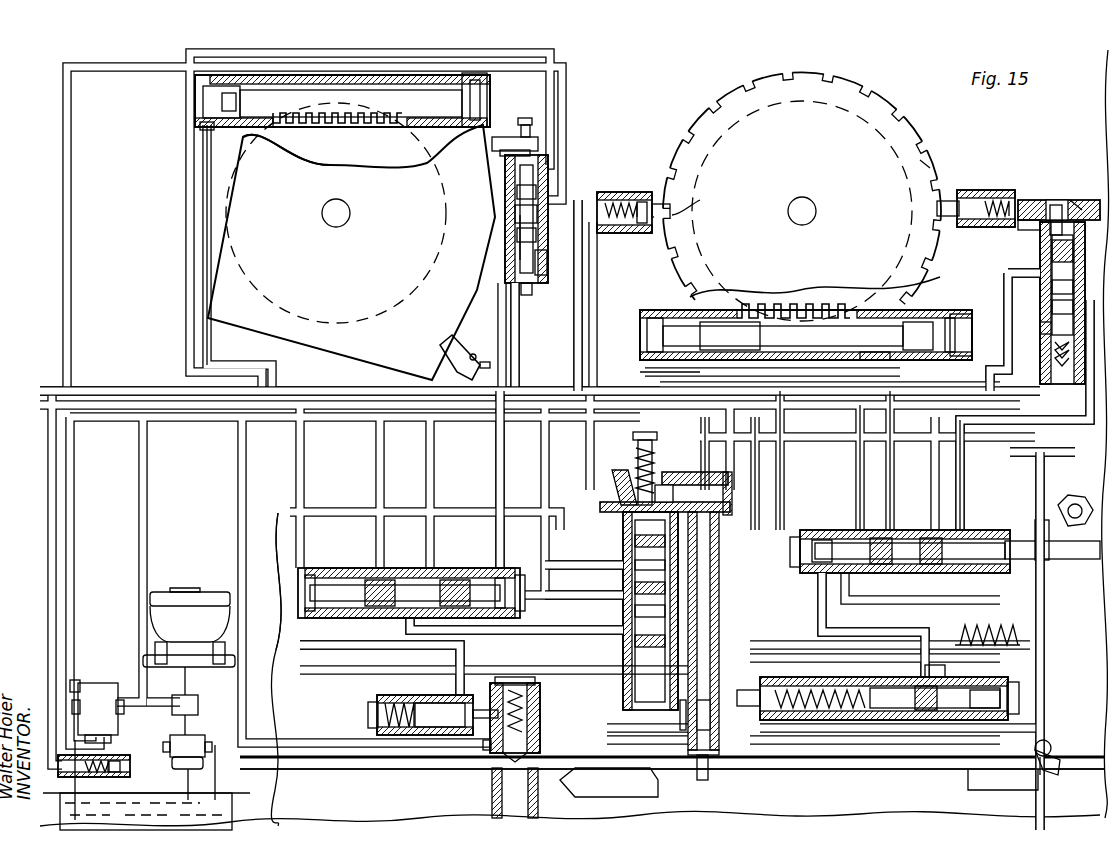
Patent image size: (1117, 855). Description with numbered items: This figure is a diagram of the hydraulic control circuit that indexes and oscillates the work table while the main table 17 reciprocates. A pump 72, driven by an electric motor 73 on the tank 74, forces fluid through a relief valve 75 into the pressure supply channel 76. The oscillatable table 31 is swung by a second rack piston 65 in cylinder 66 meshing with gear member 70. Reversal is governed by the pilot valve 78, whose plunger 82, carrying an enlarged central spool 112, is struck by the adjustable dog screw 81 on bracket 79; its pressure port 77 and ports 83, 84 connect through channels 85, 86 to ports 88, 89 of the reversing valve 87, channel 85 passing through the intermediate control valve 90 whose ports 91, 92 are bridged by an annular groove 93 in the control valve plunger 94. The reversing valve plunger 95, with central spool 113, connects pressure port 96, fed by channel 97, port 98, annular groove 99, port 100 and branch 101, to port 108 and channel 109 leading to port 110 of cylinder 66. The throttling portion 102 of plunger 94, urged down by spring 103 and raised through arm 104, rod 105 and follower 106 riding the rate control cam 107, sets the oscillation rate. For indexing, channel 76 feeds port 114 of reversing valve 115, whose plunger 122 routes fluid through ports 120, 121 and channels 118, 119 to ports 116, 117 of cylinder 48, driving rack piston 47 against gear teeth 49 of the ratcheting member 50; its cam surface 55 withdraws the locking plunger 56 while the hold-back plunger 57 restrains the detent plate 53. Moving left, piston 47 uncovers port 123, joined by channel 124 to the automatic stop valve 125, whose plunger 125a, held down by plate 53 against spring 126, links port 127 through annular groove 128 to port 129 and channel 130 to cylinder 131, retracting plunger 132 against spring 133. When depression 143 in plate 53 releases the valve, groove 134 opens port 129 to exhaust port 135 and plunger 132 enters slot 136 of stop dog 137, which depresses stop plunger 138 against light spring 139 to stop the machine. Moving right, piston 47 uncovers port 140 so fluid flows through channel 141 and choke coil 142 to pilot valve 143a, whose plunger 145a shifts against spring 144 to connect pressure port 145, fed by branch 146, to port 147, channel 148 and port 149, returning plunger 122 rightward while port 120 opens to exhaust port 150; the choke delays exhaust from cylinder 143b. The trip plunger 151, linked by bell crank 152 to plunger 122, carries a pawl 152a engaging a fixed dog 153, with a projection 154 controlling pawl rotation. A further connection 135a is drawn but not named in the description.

The main table 17 is at (280, 595).
The oscillatable table 31 is at (232, 302).
The rack piston 47 is at (925, 320).
The cylinder 48 is at (935, 300).
The gear teeth 49 is at (760, 302).
The ratcheting member 50 is at (672, 172).
The detent plate 53 is at (920, 160).
The cam surface 55 is at (690, 210).
The locking plunger 56 is at (630, 194).
The hold-back plunger 57 is at (980, 192).
The second rack piston 65 is at (400, 100).
The cylinder 66 is at (225, 100).
The gear member 70 is at (262, 140).
The pump 72 is at (195, 745).
The electric motor 73 is at (170, 600).
The tank 74 is at (225, 800).
The relief valve 75 is at (95, 690).
The pressure supply channel 76 is at (540, 390).
The pressure port 77 is at (545, 265).
The pilot valve 78 is at (530, 130).
The bracket 79 is at (510, 130).
The adjustable dog screw 81 is at (550, 95).
The pilot valve plunger 82 is at (528, 284).
The port 83 is at (548, 200).
The port 84 is at (505, 225).
The channel 85 is at (585, 262).
The channel 86 is at (515, 340).
The reversing valve 87 is at (320, 575).
The port 88 is at (500, 568).
The port 89 is at (330, 619).
The intermediate control valve 90 is at (620, 690).
The port 91 is at (600, 678).
The port 92 is at (665, 610).
The annular groove 93 is at (668, 640).
The control valve plunger 94 is at (668, 540).
The reversing valve plunger 95 is at (320, 562).
The pressure port 96 is at (380, 645).
The channel 97 is at (545, 580).
The port 98 is at (675, 562).
The annular groove 99 is at (662, 585).
The port 100 is at (640, 500).
The branch 101 is at (510, 470).
The throttling portion 102 is at (610, 625).
The spring 103 is at (662, 470).
The arm 104 is at (665, 490).
The rod 105 is at (705, 700).
The follower 106 is at (710, 775).
The rate control cam 107 is at (620, 785).
The port 108 is at (435, 562).
The channel 109 is at (200, 213).
The port 110 is at (205, 128).
The enlarged central spool 112 is at (508, 215).
The enlarged central spool 113 is at (400, 562).
The port 114 is at (920, 575).
The reversing valve 115 is at (1040, 560).
The port 116 is at (650, 372).
The port 117 is at (975, 375).
The channel 118 is at (790, 430).
The channel 119 is at (880, 470).
The port 120 is at (970, 425).
The port 121 is at (885, 500).
The plunger 122 is at (1020, 547).
The port 123 is at (900, 360).
The channel 124 is at (1003, 306).
The automatic stop valve 125 is at (1030, 225).
The plunger 125a is at (1052, 210).
The spring 126 is at (1060, 380).
The port 127 is at (1045, 245).
The annular groove 128 is at (1050, 290).
The port 129 is at (1050, 310).
The channel 130 is at (1040, 448).
The cylinder 131 is at (450, 700).
The plunger 132 is at (430, 710).
The spring 133 is at (375, 715).
The annular groove 134 is at (1045, 335).
The exhaust port 135 is at (1045, 325).
The conduit 135a is at (710, 425).
The slot 136 is at (492, 742).
The stop dog 137 is at (545, 745).
The stop plunger 138 is at (500, 770).
The light spring 139 is at (535, 720).
The port 140 is at (700, 340).
The channel 141 is at (800, 535).
The choke coil 142 is at (985, 628).
The depression 143 is at (1052, 205).
The pilot valve 143a is at (960, 728).
The cylinder 143b is at (1020, 700).
The spring 144 is at (830, 700).
The pressure port 145 is at (920, 720).
The plunger 145a is at (900, 760).
The branch 146 is at (740, 480).
The port 147 is at (935, 672).
The channel 148 is at (870, 632).
The port 149 is at (835, 575).
The exhaust port 150 is at (960, 500).
The trip plunger 151 is at (1047, 650).
The bell crank 152 is at (1085, 505).
The pawl 152a is at (1050, 762).
The fixed dog 153 is at (1010, 790).
The projection 154 is at (1050, 750).